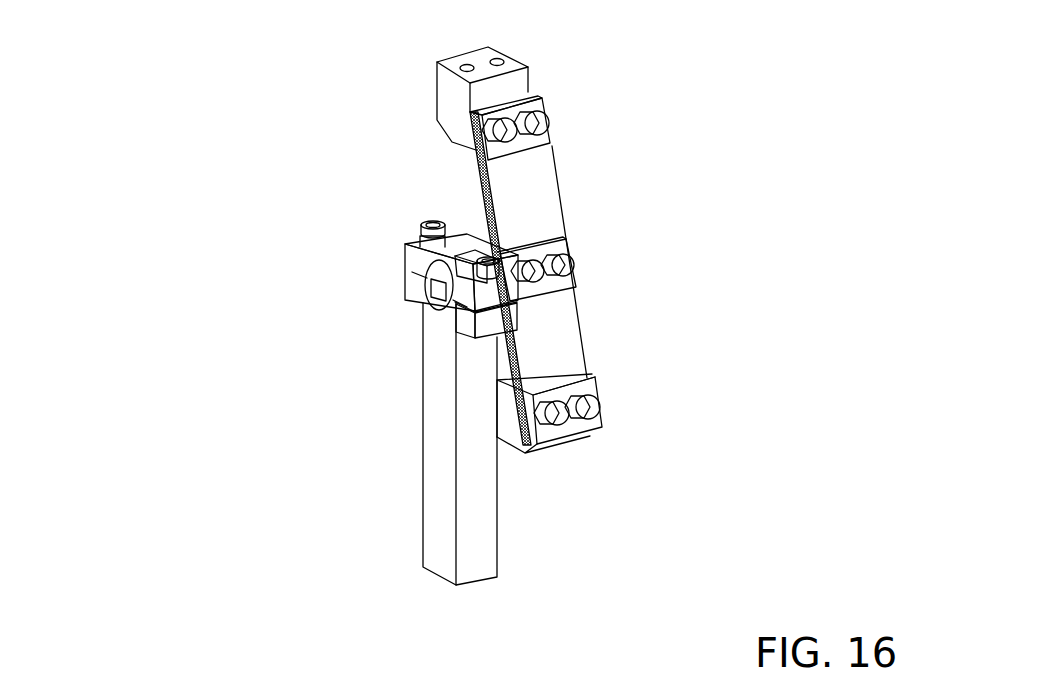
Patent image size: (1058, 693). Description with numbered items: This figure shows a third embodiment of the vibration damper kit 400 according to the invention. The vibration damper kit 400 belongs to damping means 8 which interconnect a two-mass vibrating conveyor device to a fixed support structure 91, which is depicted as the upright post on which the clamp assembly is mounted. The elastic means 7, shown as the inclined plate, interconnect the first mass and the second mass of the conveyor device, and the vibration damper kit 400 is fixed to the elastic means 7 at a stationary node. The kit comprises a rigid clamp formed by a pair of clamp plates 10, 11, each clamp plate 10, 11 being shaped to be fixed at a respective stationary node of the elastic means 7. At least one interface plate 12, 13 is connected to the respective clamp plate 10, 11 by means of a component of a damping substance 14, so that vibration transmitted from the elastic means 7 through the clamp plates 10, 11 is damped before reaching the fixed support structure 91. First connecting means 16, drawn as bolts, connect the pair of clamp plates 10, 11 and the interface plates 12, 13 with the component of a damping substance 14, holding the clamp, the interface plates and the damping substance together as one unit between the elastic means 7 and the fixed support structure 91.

The elastic means 7 is at (528, 181).
The damping means 8 is at (368, 202).
The clamp plate 10 is at (440, 288).
The clamp plate 11 is at (563, 243).
The interface plate 12 is at (492, 325).
The interface plate 13 is at (497, 293).
The component of a damping substance 14 is at (437, 273).
The first connecting means 16 is at (425, 229).
The fixed support structure 91 is at (433, 424).
The vibration damper kit 400 is at (165, 155).